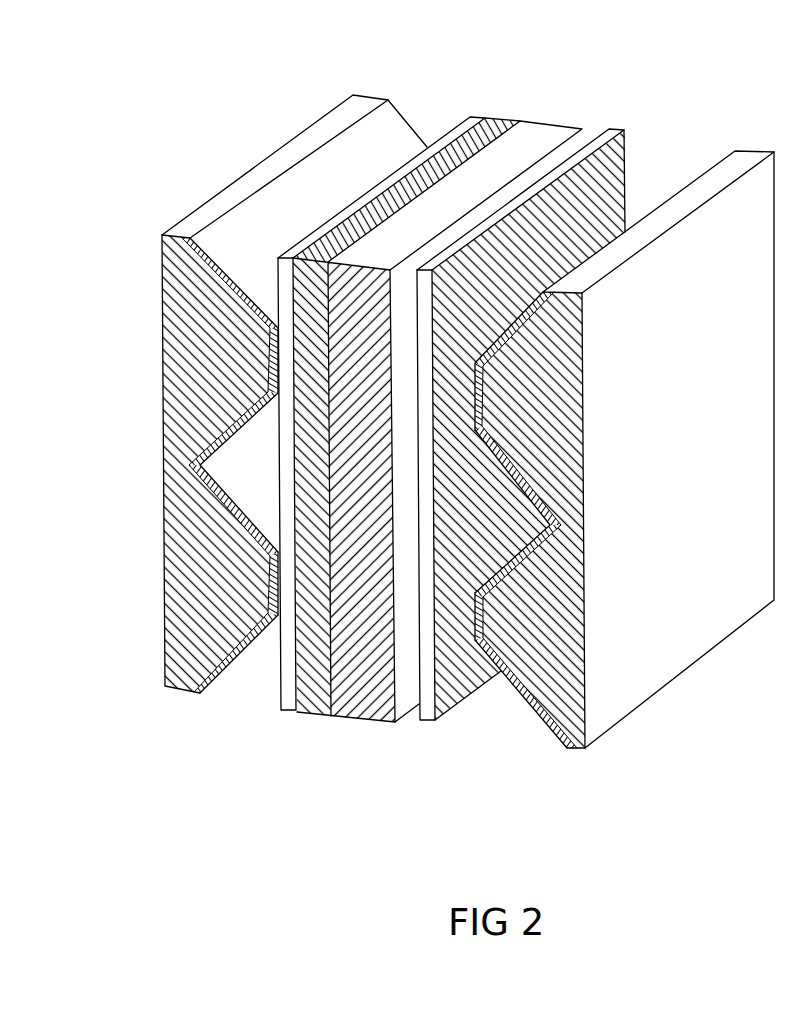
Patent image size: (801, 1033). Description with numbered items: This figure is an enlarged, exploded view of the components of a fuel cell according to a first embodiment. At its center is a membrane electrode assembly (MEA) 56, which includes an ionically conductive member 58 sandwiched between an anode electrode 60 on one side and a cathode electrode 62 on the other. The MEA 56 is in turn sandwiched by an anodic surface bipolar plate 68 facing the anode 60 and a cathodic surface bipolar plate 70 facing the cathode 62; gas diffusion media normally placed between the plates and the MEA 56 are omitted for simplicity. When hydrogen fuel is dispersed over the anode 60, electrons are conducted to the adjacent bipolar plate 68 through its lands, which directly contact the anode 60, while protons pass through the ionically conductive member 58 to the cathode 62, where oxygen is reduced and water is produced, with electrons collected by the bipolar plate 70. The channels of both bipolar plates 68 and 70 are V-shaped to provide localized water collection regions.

The membrane electrode assembly 56 is at (415, 434).
The ionically conductive member 58 is at (354, 728).
The anode electrode 60 is at (280, 716).
The cathode electrode 62 is at (422, 731).
The anodic surface bipolar plate 68 is at (238, 402).
The cathodic surface bipolar plate 70 is at (603, 479).